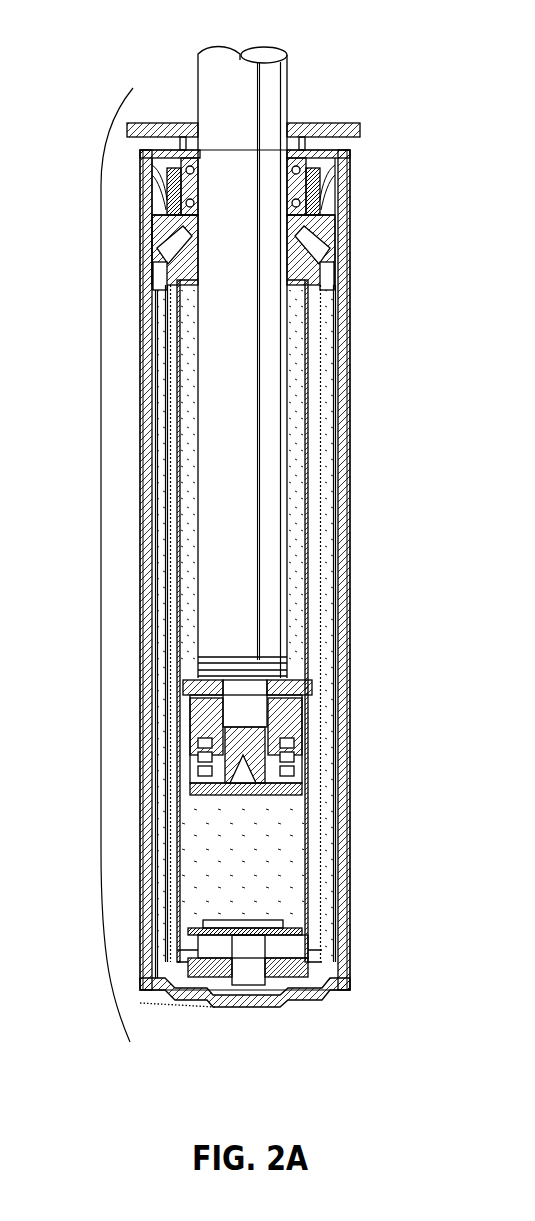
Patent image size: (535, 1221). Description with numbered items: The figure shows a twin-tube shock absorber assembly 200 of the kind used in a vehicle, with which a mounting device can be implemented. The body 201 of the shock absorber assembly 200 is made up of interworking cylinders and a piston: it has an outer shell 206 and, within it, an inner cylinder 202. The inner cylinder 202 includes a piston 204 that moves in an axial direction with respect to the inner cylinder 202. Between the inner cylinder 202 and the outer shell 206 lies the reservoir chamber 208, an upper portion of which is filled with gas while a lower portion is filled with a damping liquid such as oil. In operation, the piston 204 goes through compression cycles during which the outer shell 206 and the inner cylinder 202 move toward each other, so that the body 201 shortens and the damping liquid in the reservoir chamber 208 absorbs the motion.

The twin-tube shock absorber assembly 200 is at (330, 72).
The body 201 is at (101, 565).
The inner cylinder 202 is at (300, 323).
The piston 204 is at (178, 705).
The outer shell 206 is at (346, 810).
The reservoir chamber 208 is at (346, 465).